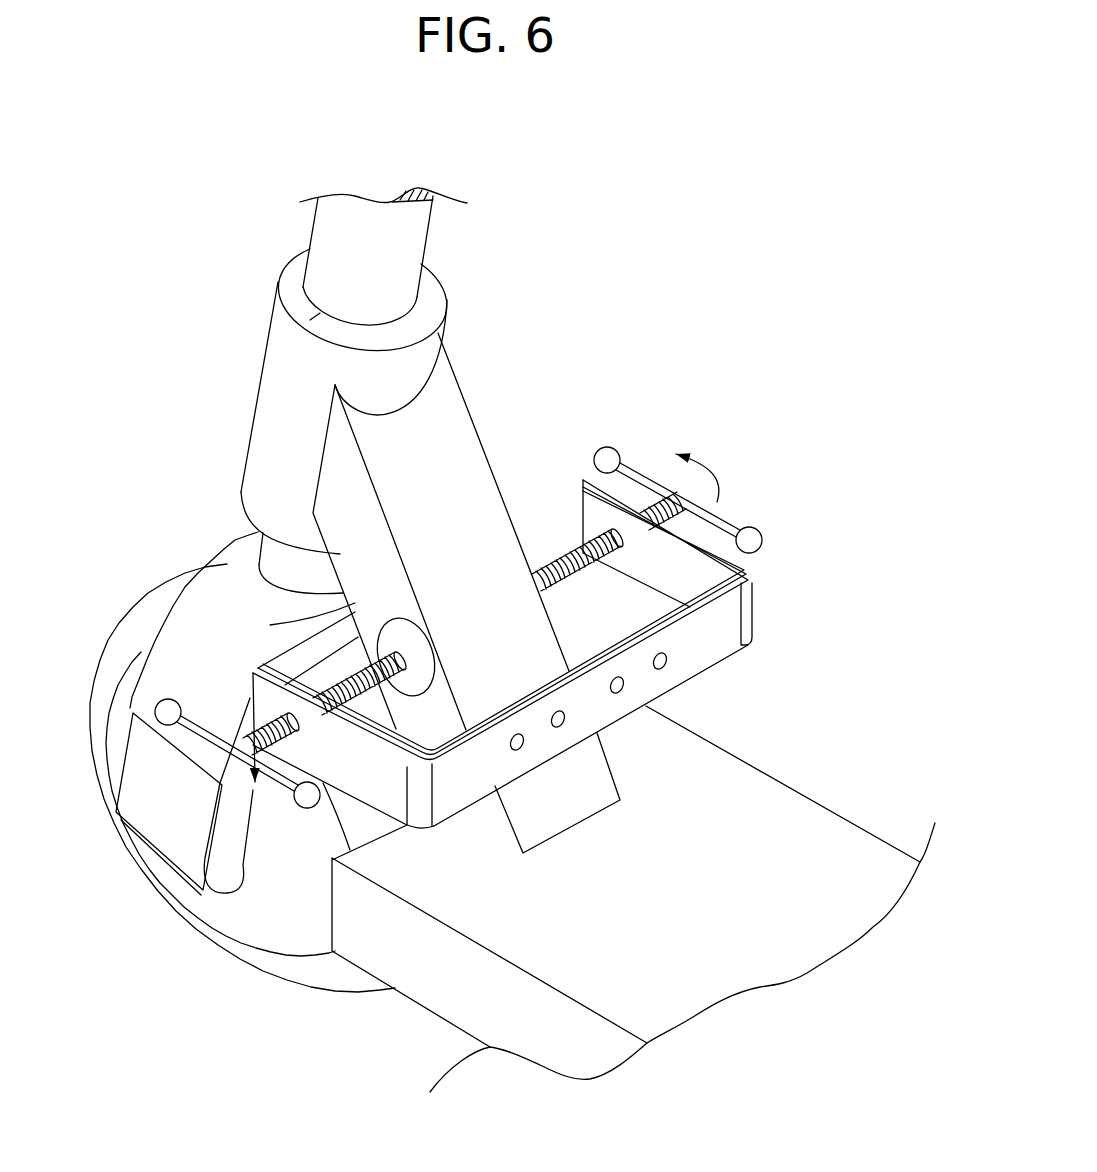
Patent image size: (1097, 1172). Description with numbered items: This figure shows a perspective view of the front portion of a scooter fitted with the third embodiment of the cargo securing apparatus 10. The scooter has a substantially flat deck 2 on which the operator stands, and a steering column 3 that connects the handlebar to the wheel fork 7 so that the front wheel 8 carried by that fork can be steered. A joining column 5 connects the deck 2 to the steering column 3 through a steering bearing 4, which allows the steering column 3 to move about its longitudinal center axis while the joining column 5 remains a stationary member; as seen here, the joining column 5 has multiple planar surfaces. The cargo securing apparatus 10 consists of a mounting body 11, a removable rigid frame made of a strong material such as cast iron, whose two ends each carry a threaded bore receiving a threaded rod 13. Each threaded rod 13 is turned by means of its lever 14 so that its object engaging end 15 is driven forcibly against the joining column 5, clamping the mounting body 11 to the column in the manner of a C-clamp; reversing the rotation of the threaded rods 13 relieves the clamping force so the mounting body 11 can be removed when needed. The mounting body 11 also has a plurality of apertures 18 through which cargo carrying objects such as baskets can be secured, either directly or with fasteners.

The deck 2 is at (795, 827).
The steering column 3 is at (424, 235).
The steering bearing 4 is at (272, 442).
The joining column 5 is at (449, 461).
The wheel fork 7 is at (178, 829).
The front wheel 8 is at (258, 911).
The cargo securing apparatus 10 is at (761, 457).
The mounting body 11 is at (726, 632).
The threaded rod 13 is at (349, 678).
The lever 14 is at (612, 452).
The object engaging end 15 is at (416, 683).
The apertures 18 is at (668, 670).